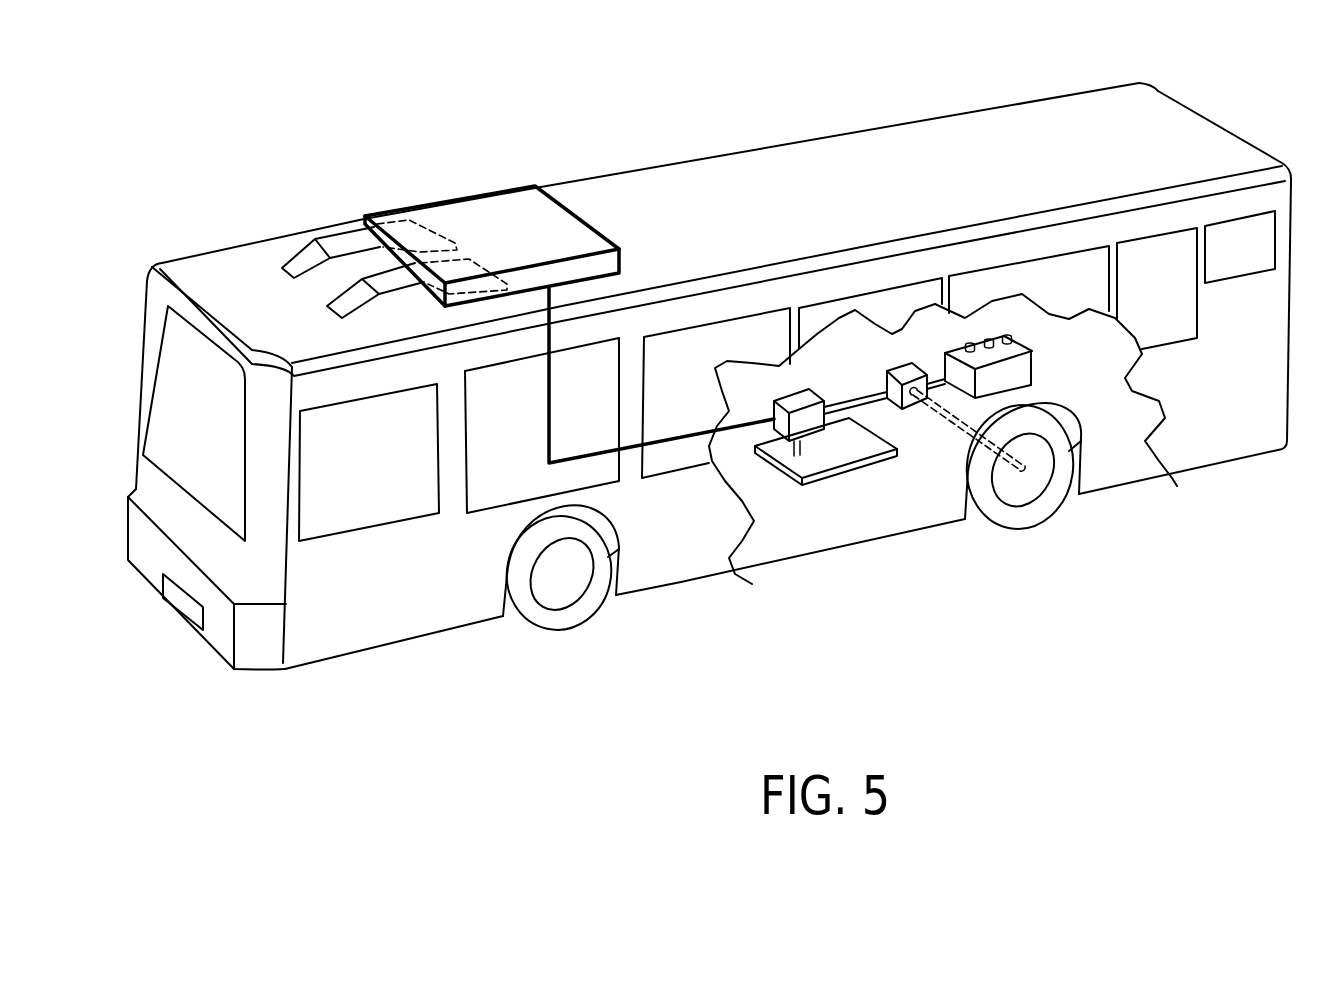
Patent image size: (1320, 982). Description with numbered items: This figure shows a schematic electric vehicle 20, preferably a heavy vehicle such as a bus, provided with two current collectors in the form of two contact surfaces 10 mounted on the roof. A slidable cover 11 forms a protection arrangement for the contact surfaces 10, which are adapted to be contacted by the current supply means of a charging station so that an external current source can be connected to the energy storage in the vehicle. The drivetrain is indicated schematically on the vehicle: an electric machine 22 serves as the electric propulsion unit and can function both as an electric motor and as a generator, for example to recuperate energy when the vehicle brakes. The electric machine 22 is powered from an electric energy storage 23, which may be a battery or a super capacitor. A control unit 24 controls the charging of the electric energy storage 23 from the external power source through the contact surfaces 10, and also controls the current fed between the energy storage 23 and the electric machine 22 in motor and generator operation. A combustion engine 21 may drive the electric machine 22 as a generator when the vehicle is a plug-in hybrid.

The contact surface 10 is at (328, 227).
The slidable cover 11 is at (500, 205).
The electric vehicle 20 is at (268, 768).
The combustion engine 21 is at (1080, 445).
The electric machine 22 is at (956, 484).
The electric energy storage 23 is at (827, 518).
The control unit 24 is at (830, 511).